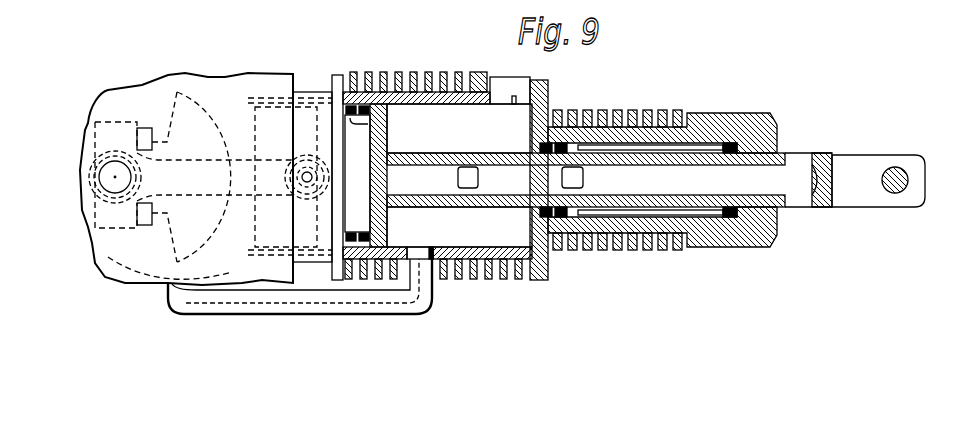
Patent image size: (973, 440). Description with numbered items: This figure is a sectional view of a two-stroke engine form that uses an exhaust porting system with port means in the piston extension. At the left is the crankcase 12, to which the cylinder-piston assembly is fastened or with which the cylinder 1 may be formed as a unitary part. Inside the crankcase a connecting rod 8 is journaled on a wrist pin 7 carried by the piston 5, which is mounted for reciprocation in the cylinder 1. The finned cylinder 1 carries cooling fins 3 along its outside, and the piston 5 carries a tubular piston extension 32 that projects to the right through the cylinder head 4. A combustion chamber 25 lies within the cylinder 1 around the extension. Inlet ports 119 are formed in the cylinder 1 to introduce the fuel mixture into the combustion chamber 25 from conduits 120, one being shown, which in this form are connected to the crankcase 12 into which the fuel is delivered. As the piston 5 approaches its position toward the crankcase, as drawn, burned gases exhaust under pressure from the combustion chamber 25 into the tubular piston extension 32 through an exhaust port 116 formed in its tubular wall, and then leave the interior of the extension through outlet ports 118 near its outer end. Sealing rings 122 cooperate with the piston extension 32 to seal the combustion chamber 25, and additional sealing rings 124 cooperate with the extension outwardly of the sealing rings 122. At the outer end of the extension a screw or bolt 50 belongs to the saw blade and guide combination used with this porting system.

The crankcase 12 is at (154, 278).
The connecting rod 8 is at (218, 168).
The wrist pin 7 is at (300, 173).
The cylinder 1 is at (470, 279).
The cooling fins 3 is at (545, 277).
The combustion chamber 25 is at (520, 240).
The piston 5 is at (372, 131).
The inlet ports 119 is at (430, 246).
The conduits 120 is at (360, 314).
The cylinder head 4 is at (510, 88).
The sealing rings 122 is at (547, 143).
The additional sealing rings 124 is at (735, 142).
The tubular piston extension 32 is at (652, 159).
The exhaust port 116 is at (562, 177).
The outlet ports 118 is at (797, 200).
The screw or bolt 50 is at (897, 168).